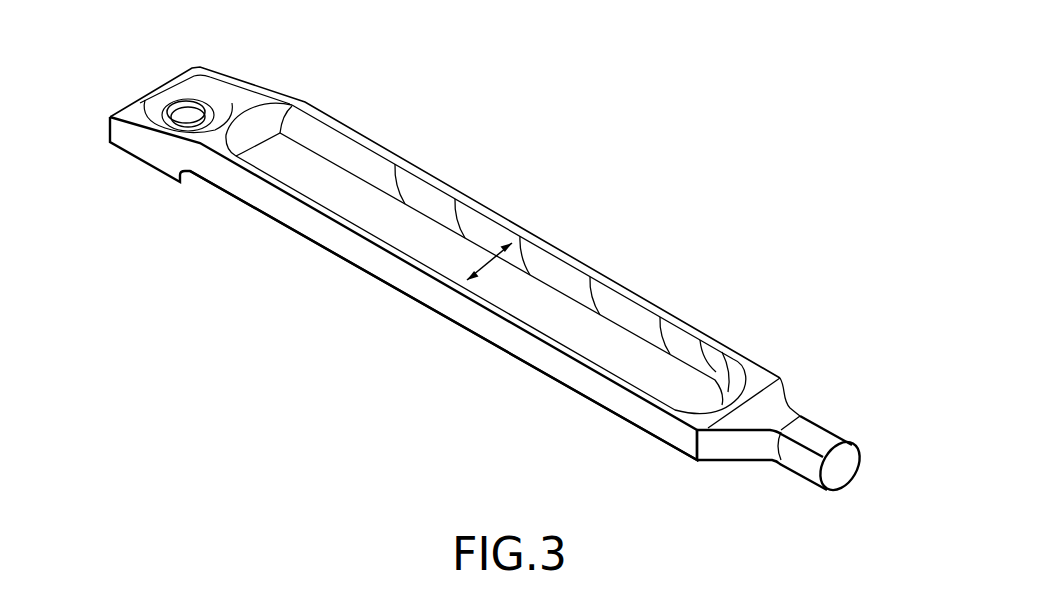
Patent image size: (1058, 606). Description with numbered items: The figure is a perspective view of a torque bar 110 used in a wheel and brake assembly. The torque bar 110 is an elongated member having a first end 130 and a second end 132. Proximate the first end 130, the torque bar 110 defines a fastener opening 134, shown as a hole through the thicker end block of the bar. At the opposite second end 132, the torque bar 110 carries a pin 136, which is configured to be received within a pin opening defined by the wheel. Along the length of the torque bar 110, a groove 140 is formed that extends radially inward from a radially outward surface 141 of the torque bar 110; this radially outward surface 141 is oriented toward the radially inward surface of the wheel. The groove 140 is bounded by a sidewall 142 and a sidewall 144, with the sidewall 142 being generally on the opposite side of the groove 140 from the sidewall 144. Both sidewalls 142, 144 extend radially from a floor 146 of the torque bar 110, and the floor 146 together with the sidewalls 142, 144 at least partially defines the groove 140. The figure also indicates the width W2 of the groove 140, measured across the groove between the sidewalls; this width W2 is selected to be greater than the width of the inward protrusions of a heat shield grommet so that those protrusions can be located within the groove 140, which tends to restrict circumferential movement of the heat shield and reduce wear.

The torque bar 110 is at (695, 132).
The first end 130 is at (142, 97).
The second end 132 is at (833, 477).
The fastener opening 134 is at (172, 96).
The pin 136 is at (823, 443).
The groove 140 is at (645, 308).
The radially outward surface 141 is at (752, 383).
The sidewall 142 is at (462, 310).
The sidewall 144 is at (588, 287).
The floor 146 is at (311, 166).
The width of groove W2 is at (490, 263).